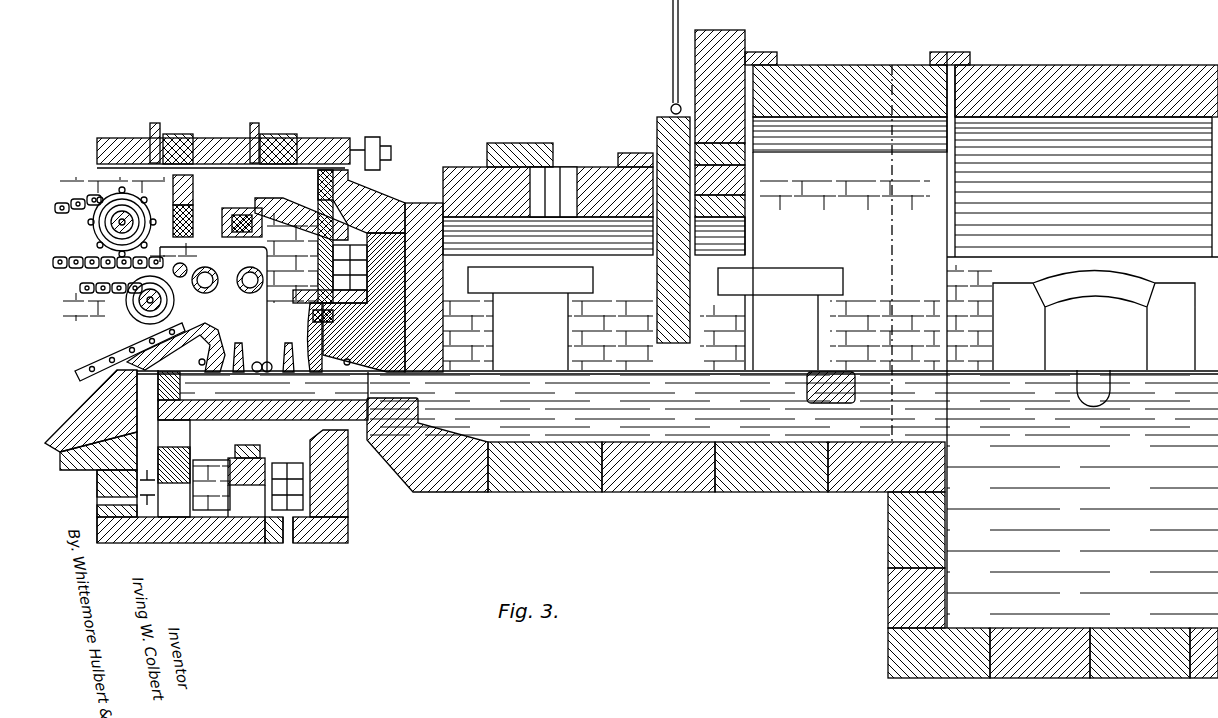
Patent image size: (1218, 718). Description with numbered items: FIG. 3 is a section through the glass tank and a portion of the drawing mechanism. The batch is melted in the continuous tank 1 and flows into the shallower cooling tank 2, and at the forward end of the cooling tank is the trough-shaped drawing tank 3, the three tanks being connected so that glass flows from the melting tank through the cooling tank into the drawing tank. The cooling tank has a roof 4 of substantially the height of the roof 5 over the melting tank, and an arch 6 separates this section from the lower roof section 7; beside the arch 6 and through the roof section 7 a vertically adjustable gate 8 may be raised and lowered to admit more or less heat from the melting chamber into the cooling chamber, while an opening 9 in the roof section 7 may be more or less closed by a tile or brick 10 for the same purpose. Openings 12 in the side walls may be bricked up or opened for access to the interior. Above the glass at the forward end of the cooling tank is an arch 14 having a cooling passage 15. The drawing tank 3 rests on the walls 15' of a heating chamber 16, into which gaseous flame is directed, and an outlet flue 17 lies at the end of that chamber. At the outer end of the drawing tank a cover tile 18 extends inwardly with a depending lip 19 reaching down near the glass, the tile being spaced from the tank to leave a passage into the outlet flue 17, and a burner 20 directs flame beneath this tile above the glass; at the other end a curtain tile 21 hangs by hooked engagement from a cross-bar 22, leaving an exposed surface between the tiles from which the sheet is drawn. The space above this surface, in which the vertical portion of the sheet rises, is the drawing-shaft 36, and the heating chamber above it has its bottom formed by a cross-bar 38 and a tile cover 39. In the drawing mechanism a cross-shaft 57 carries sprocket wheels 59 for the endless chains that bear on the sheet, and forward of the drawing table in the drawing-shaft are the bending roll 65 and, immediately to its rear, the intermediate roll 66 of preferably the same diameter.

The continuous tank 1 is at (1053, 585).
The cooling tank 2 is at (735, 420).
The drawing tank 3 is at (293, 420).
The roof 4 is at (840, 65).
The roof 5 is at (1086, 65).
The arch 6 is at (746, 46).
The roof section 7 is at (455, 166).
The vertically adjustable gate 8 is at (655, 116).
The opening 9 is at (557, 176).
The tile or brick 10 is at (518, 142).
The openings 12 is at (831, 318).
The arch 14 is at (408, 237).
The cooling passage 15 is at (306, 375).
The walls 15' is at (160, 496).
The heating chamber 16 is at (210, 500).
The outlet flue 17 is at (100, 417).
The cover tile 18 is at (125, 345).
The depending lip 19 is at (225, 338).
The burner 20 is at (238, 347).
The curtain tile 21 is at (310, 336).
The cross-bar 22 is at (310, 318).
The drawing-shaft 36 is at (301, 232).
The cross-bar 38 is at (248, 235).
The tile cover 39 is at (226, 230).
The cross-shaft 57 is at (117, 220).
The sprocket wheels 59 is at (126, 237).
The bending roll 65 is at (246, 288).
The intermediate roll 66 is at (209, 287).